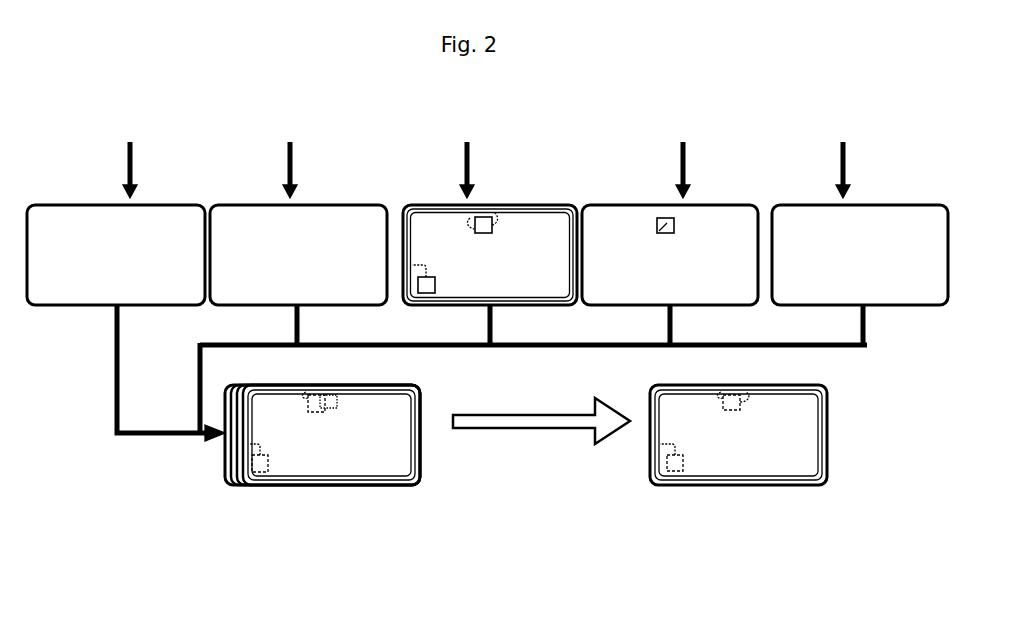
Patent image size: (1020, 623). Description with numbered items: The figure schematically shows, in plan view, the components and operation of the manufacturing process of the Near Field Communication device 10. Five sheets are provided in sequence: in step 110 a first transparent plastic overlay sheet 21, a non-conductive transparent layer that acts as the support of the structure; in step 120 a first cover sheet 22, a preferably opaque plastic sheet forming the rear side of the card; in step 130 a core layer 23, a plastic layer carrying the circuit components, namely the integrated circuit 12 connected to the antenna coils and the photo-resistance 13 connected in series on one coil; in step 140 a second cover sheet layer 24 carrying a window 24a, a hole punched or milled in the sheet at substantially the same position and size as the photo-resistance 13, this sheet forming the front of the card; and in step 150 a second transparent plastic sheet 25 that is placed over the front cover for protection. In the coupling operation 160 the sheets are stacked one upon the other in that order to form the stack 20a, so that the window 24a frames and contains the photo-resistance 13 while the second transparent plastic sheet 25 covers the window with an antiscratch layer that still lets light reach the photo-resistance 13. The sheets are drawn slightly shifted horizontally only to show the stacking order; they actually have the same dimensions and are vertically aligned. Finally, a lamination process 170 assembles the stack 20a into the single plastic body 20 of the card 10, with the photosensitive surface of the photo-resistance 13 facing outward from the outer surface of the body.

The Near Field Communication device 10 is at (777, 486).
The integrated circuit 12 is at (533, 369).
The photo-resistance 13 is at (492, 228).
The plastic body 20 is at (830, 433).
The stack 20a is at (300, 488).
The first transparent plastic overlay sheet 21 is at (64, 228).
The first cover sheet 22 is at (256, 228).
The core layer 23 is at (432, 228).
The second cover sheet layer 24 is at (635, 222).
The window 24a is at (676, 226).
The second transparent plastic sheet 25 is at (878, 226).
The step of providing the first transparent plastic overlay sheet 110 is at (140, 153).
The step of providing the first cover sheet 120 is at (285, 153).
The step of providing the core layer 130 is at (467, 153).
The step of providing the second cover sheet layer 140 is at (676, 153).
The step of providing the second transparent plastic sheet 150 is at (831, 153).
The coupling operation 160 is at (171, 390).
The lamination process 170 is at (541, 433).